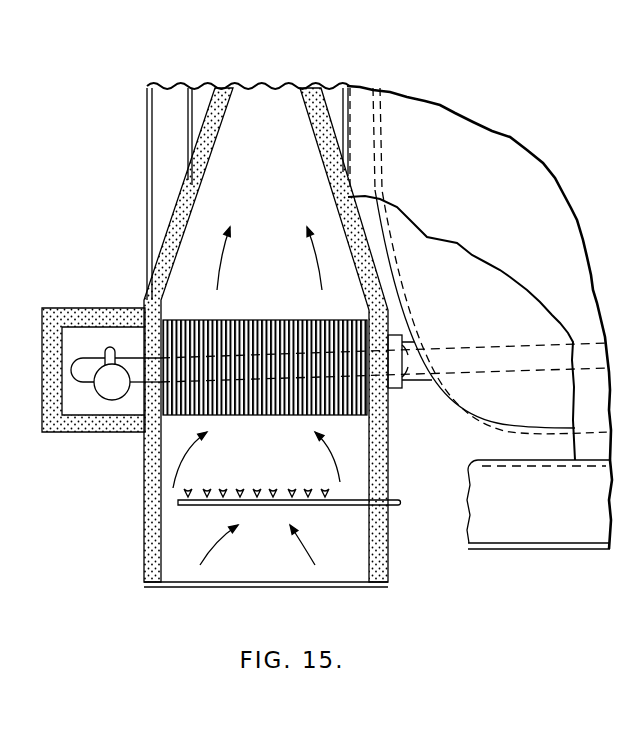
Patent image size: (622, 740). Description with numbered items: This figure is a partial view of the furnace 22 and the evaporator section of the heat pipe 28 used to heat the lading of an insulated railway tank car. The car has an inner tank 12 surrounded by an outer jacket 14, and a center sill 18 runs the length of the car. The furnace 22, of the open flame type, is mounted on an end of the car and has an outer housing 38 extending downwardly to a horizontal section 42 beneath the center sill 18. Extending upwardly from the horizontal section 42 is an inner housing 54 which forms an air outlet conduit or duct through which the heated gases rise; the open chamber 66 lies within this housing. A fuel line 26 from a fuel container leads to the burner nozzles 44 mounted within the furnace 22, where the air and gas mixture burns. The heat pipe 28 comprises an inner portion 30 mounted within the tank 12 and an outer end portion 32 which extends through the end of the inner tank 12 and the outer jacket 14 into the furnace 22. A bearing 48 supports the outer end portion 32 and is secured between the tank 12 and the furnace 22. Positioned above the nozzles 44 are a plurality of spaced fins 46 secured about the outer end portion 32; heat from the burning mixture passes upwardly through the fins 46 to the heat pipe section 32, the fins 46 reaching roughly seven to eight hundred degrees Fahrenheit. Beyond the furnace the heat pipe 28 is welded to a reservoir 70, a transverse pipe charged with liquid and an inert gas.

The inner tank 12 is at (497, 423).
The outer jacket 14 is at (512, 139).
The center sill 18 is at (541, 537).
The furnace 22 is at (135, 177).
The fuel line 26 is at (404, 509).
The heat pipe 28 is at (455, 360).
The inner portion 30 is at (519, 345).
The outer end portion 32 is at (280, 372).
The outer housing 38 is at (150, 112).
The horizontal section 42 is at (388, 564).
The burner nozzles 44 is at (326, 503).
The fins 46 is at (249, 321).
The bearing 48 is at (423, 383).
The inner housing 54 is at (233, 97).
The combustion chamber 66 is at (256, 370).
The reservoir 70 is at (100, 390).